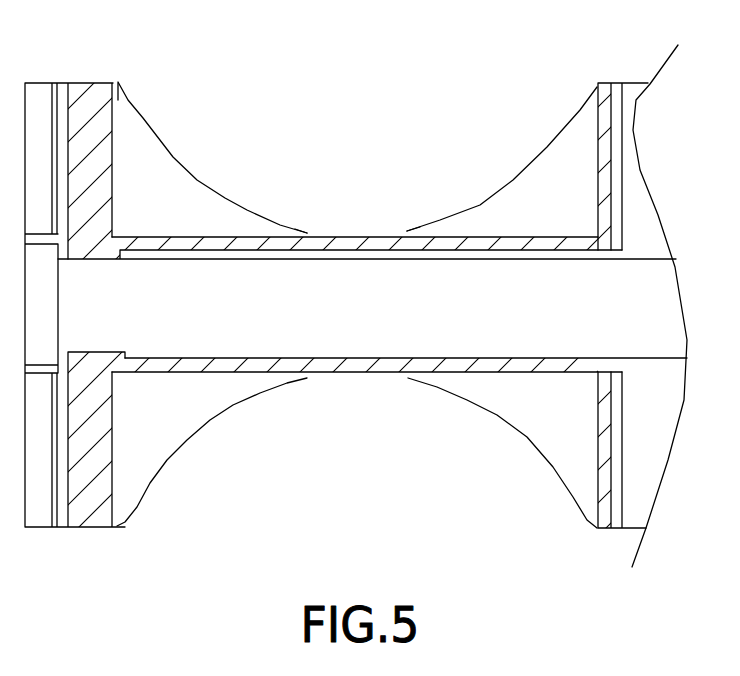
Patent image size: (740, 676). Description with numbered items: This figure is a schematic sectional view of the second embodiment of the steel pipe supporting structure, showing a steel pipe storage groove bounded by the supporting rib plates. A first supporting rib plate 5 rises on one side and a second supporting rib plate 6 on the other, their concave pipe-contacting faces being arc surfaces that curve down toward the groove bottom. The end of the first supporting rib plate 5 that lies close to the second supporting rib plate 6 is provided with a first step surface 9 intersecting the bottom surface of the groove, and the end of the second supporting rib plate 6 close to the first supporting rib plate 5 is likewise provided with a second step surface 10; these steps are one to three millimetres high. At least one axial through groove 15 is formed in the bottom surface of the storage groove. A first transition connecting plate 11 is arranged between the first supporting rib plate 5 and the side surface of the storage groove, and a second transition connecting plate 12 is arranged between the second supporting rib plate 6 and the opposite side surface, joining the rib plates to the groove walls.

The first supporting rib plate 5 is at (212, 153).
The second supporting rib plate 6 is at (502, 136).
The first step surface 9 is at (301, 183).
The second step surface 10 is at (411, 170).
The first transition connecting plate 11 is at (118, 80).
The second transition connecting plate 12 is at (596, 83).
The axial through groove 15 is at (360, 237).